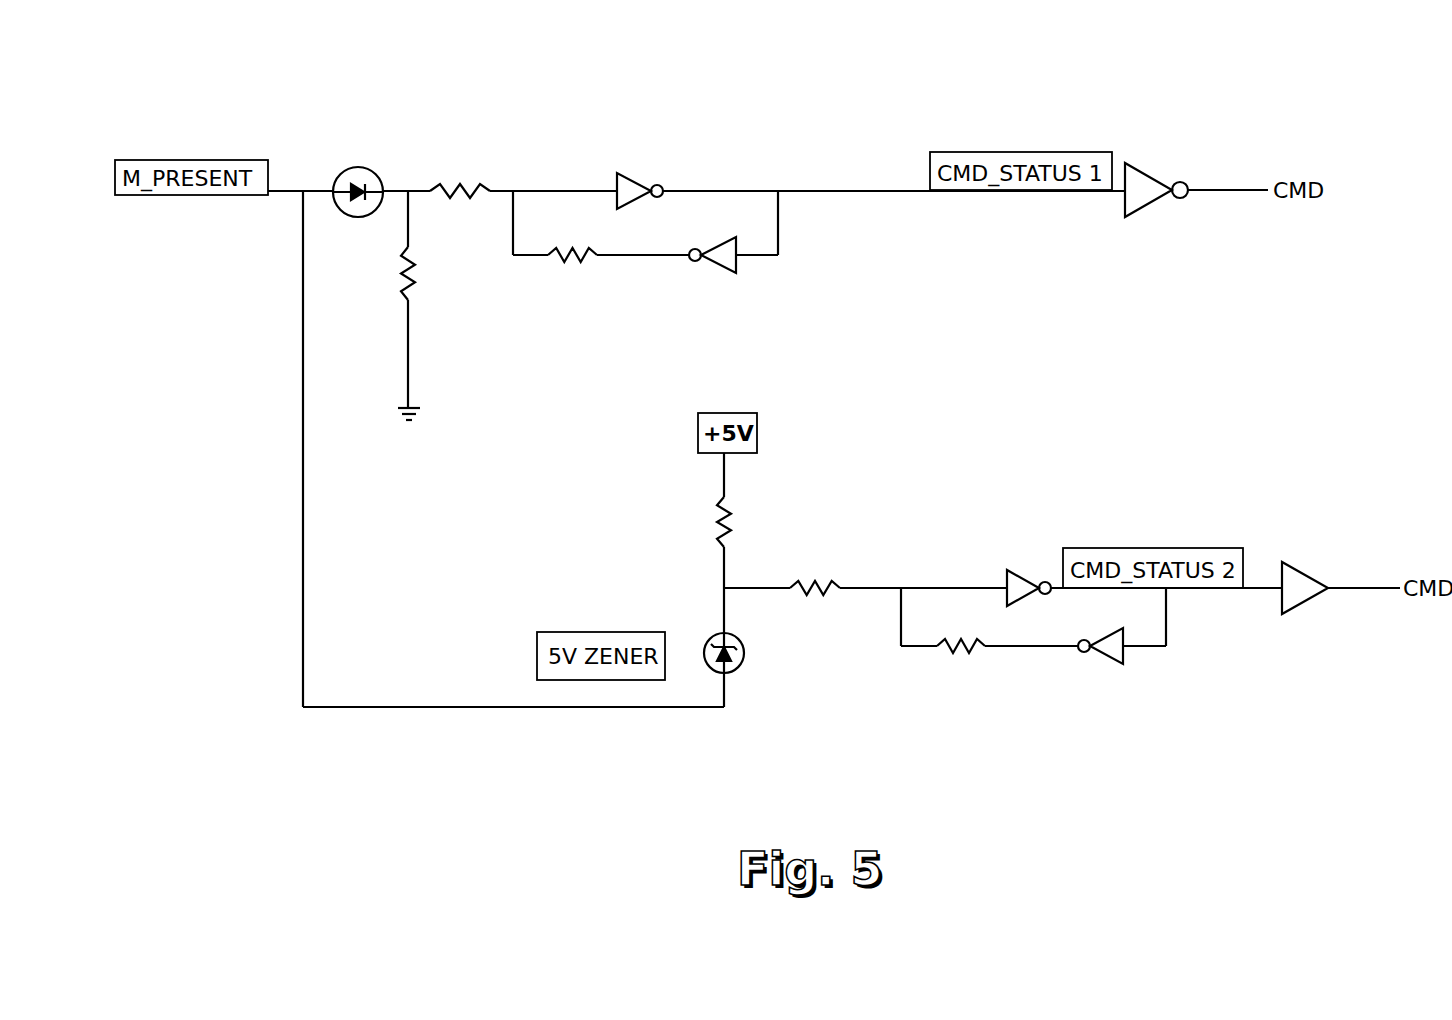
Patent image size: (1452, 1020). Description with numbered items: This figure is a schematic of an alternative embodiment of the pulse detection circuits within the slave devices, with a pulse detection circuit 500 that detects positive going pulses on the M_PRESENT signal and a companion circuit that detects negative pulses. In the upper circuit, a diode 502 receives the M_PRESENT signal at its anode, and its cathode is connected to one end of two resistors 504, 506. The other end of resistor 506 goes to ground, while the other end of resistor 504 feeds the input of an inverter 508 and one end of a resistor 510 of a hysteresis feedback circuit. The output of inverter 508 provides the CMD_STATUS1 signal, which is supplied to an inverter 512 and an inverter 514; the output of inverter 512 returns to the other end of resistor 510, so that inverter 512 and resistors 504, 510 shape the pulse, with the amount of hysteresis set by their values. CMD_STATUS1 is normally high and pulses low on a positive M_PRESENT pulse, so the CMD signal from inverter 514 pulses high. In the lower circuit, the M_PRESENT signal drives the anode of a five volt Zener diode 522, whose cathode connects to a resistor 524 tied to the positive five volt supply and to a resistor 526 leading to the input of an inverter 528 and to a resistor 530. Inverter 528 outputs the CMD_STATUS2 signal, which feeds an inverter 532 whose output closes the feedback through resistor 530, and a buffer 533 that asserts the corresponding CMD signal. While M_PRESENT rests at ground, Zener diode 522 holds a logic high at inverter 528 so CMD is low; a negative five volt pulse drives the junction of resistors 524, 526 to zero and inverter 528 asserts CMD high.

The pulse detection circuit 500 is at (809, 140).
The diode 502 is at (372, 170).
The resistor 504 is at (462, 182).
The resistor 506 is at (398, 270).
The inverter 508 is at (630, 175).
The resistor 510 is at (565, 268).
The inverter 512 is at (717, 267).
The inverter 514 is at (1143, 202).
The 5V Zener diode 522 is at (735, 672).
The resistor 524 is at (717, 515).
The resistor 526 is at (818, 582).
The inverter 528 is at (1027, 570).
The resistor 530 is at (973, 657).
The inverter 532 is at (1110, 660).
The buffer 533 is at (1303, 570).